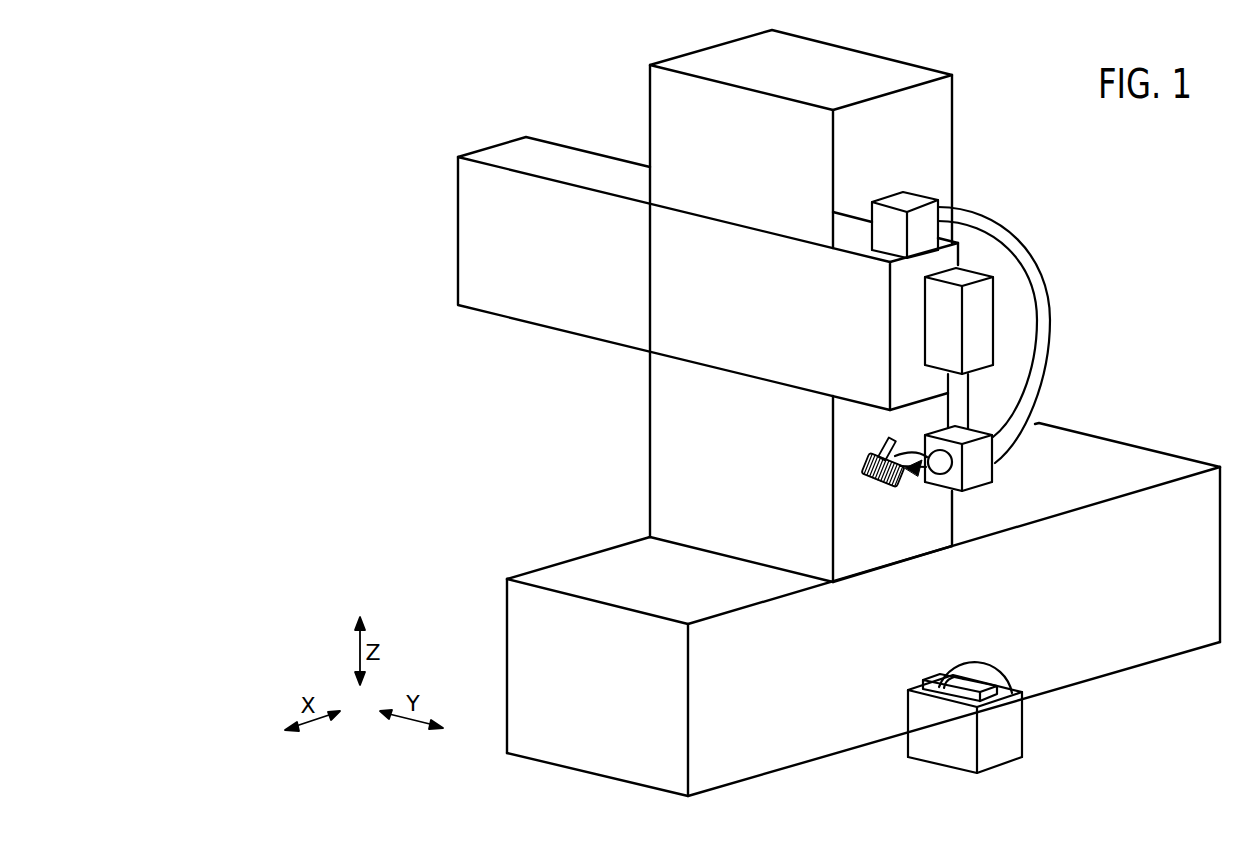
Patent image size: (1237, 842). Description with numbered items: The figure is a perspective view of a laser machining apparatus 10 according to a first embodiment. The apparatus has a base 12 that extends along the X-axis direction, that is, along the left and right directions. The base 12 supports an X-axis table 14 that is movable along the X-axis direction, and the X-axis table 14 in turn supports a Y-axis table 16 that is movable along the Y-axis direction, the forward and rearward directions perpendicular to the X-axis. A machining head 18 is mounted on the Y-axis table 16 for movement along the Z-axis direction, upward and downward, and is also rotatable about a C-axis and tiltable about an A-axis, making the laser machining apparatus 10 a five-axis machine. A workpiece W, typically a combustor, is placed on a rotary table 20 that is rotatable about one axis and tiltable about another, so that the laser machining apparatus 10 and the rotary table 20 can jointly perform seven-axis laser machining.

The laser machining apparatus 10 is at (1203, 168).
The base 12 is at (573, 570).
The X-axis table 14 is at (665, 118).
The Y-axis table 16 is at (517, 298).
The machining head 18 is at (891, 497).
The rotary table 20 is at (1023, 738).
The workpiece W is at (982, 675).